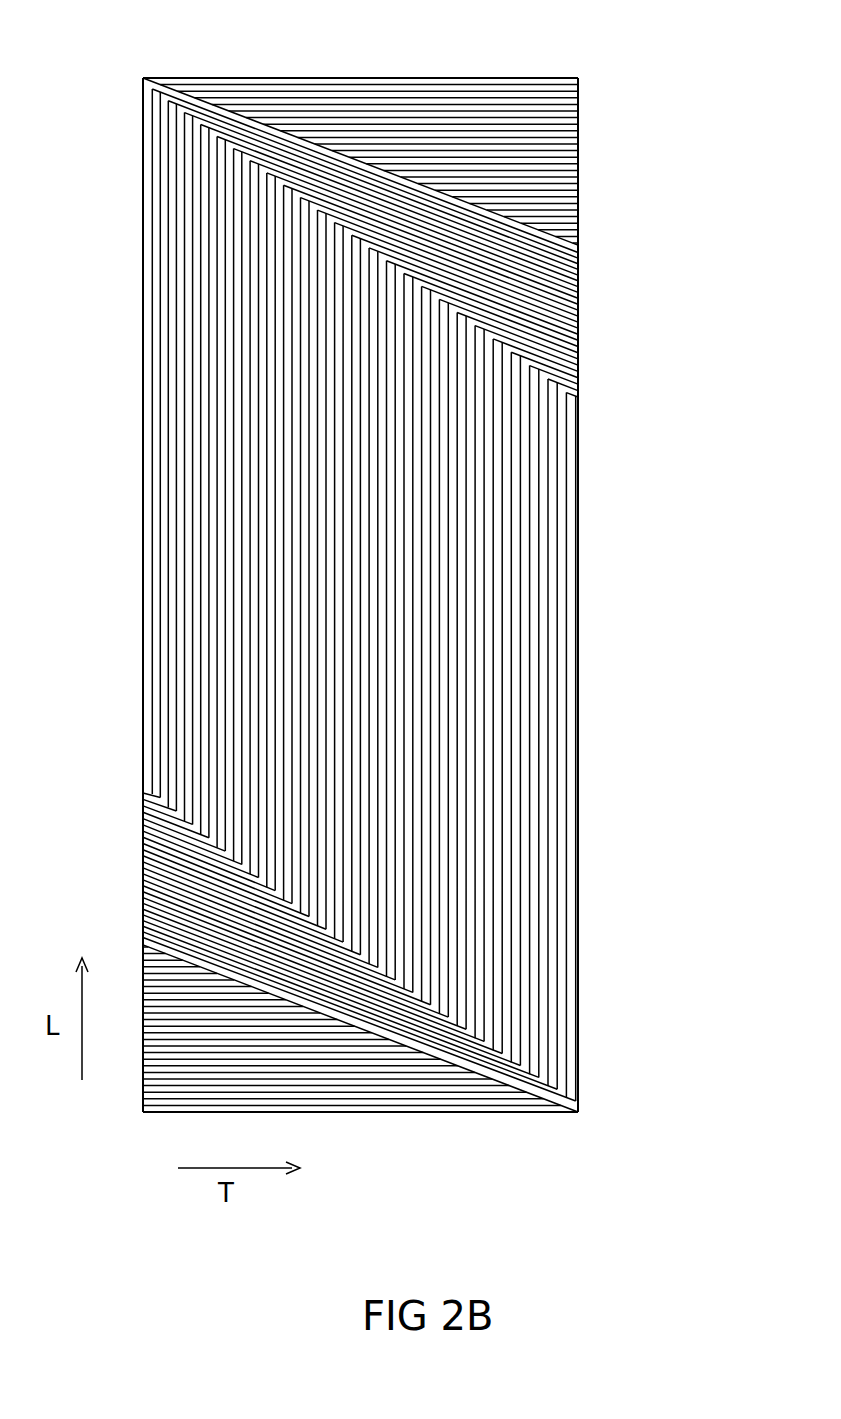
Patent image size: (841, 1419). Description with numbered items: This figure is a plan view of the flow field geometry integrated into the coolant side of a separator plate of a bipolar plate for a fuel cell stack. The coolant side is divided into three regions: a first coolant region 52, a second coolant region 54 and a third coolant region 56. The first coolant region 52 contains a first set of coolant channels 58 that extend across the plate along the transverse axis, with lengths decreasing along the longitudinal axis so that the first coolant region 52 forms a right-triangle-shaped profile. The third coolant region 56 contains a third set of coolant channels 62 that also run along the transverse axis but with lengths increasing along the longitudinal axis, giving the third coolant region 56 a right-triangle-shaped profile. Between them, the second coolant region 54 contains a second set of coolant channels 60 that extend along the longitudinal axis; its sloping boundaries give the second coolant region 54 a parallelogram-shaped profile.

The first coolant region 52 is at (405, 1113).
The second coolant region 54 is at (592, 542).
The third coolant region 56 is at (592, 92).
The first set of coolant channels 58 is at (518, 1102).
The second set of coolant channels 60 is at (552, 697).
The third set of coolant channels 62 is at (278, 102).